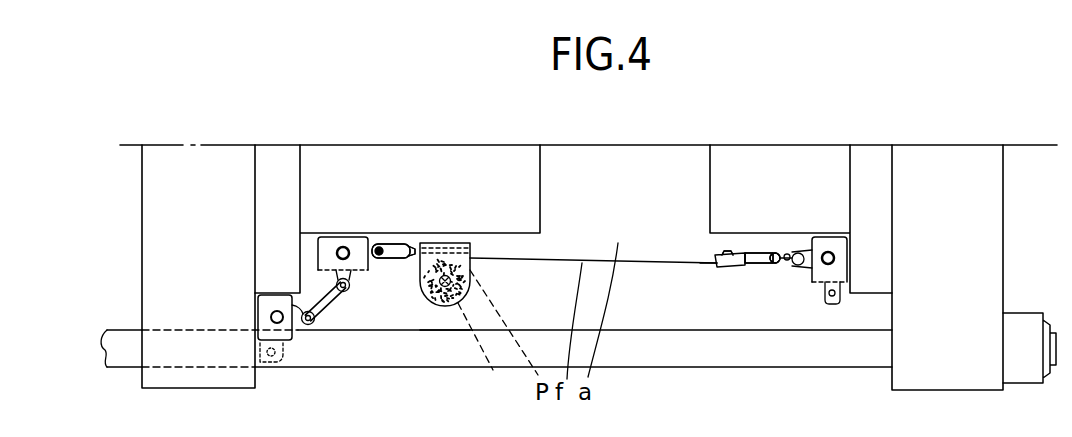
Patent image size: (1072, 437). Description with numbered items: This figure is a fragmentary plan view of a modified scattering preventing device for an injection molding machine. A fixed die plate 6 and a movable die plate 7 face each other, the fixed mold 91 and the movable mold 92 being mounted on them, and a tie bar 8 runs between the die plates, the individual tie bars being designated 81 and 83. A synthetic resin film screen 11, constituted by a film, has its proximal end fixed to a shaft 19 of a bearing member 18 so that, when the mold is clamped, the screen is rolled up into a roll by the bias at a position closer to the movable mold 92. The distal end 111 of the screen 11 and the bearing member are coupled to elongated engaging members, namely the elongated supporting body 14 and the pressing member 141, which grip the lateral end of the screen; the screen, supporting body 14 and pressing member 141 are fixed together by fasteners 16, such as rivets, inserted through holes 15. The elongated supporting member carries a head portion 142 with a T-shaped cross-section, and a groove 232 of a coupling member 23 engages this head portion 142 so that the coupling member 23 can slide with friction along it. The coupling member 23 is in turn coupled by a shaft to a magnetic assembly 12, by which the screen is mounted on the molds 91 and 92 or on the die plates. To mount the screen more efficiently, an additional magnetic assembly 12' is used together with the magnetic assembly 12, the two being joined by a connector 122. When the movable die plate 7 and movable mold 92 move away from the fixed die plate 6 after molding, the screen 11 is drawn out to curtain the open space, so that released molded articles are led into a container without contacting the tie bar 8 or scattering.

The fixed die plate 6 is at (932, 162).
The movable die plate 7 is at (222, 162).
The tie bar 8 is at (122, 368).
The tie bar 81 is at (423, 358).
The tie bar 83 is at (423, 358).
The mold 91 is at (743, 153).
The movable mold 92 is at (517, 157).
The synthetic resin film screen 11 is at (657, 263).
The distal end of the screen 111 is at (777, 335).
The magnetic assembly 12 is at (599, 321).
The magnetic assembly 12' is at (277, 350).
The connector 122 is at (309, 325).
The elongated supporting body 14 is at (715, 266).
The pressing member 141 is at (731, 329).
The head portion 142 is at (412, 117).
The hole 15 is at (732, 267).
The fastener 16 is at (743, 265).
The bearing member 18 is at (419, 268).
The shaft 19 is at (498, 337).
The coupling member 23 is at (393, 244).
The groove 232 is at (455, 117).